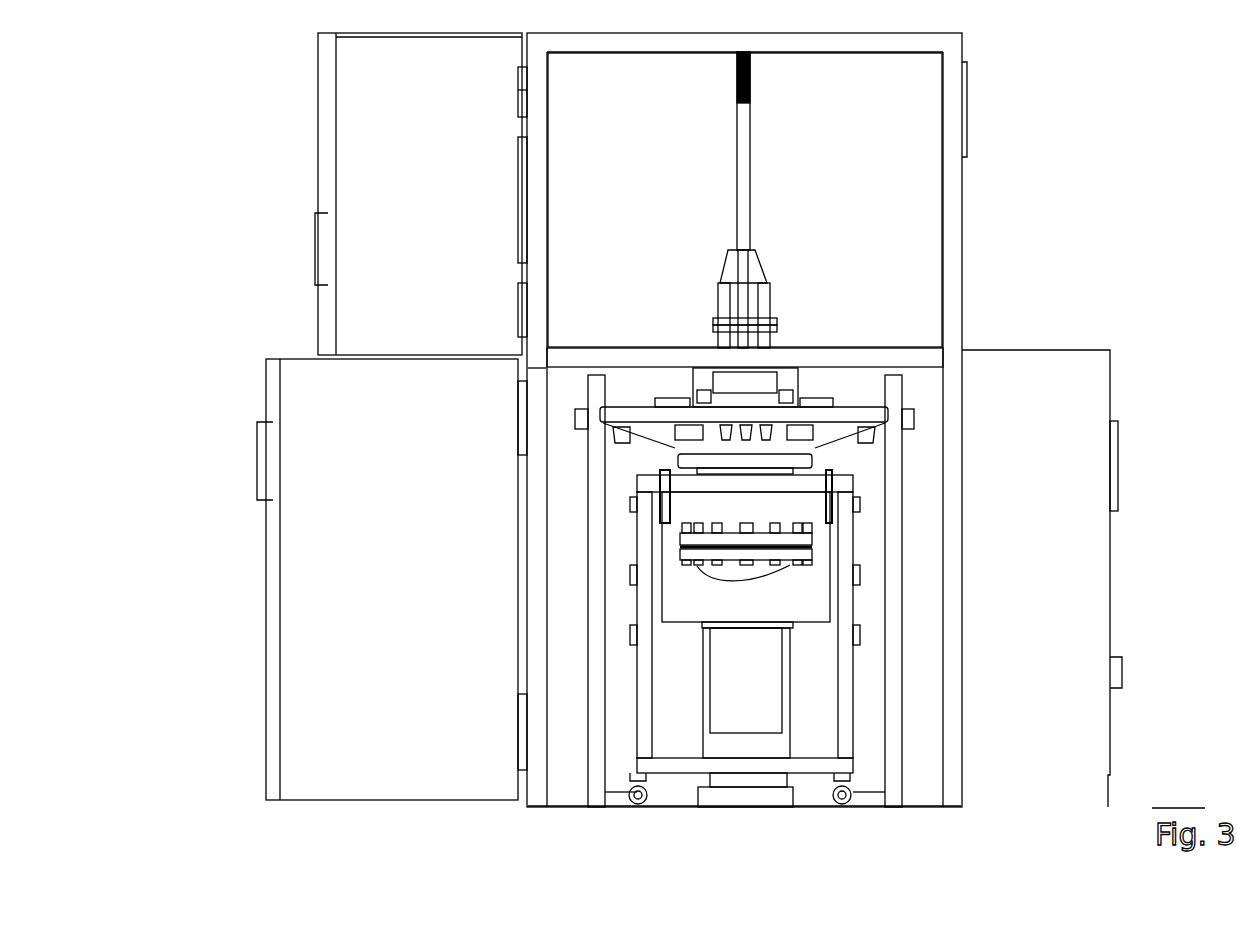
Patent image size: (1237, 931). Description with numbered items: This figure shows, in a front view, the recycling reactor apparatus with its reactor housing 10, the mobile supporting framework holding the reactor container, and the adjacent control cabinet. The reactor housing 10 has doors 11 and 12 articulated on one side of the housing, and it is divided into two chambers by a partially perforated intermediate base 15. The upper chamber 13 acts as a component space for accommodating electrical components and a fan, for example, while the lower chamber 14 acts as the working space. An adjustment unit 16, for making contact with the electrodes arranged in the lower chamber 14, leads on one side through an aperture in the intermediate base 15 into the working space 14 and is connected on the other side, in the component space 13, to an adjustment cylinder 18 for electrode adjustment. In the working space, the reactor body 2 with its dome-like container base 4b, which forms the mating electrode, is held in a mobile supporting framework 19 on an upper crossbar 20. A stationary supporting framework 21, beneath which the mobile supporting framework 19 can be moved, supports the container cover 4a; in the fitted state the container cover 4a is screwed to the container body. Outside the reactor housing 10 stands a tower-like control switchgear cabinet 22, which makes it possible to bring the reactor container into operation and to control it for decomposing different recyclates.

The reactor body 2 is at (727, 510).
The container cover 4a is at (782, 447).
The container base 4b is at (705, 583).
The reactor housing 10 is at (963, 222).
The door 11 is at (365, 137).
The door 12 is at (300, 660).
The upper chamber 13 is at (921, 180).
The lower chamber 14 is at (565, 755).
The intermediate base 15 is at (907, 350).
The adjustment unit 16 is at (757, 257).
The adjustment cylinder 18 is at (752, 198).
The mobile supporting framework 19 is at (847, 694).
The upper crossbar 20 is at (848, 478).
The stationary supporting framework 21 is at (893, 622).
The control switchgear cabinet 22 is at (1113, 556).